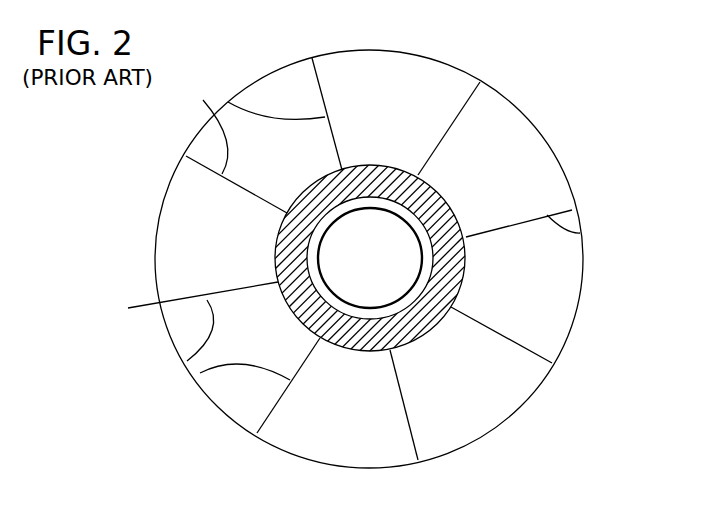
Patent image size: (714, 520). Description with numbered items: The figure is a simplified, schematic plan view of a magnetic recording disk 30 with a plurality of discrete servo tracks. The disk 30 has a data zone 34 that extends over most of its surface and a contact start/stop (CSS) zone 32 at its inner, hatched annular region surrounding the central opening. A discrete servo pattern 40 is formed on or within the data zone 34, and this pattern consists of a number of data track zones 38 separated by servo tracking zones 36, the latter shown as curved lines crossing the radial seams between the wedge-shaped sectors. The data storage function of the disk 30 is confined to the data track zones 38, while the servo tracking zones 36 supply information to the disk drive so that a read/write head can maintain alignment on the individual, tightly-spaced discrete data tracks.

The magnetic recording disk 30 is at (543, 95).
The contact start/stop (CSS) zone 32 is at (455, 276).
The data zone 34 is at (480, 380).
The servo tracking zones 36 is at (228, 102).
The data track zones 38 is at (303, 93).
The discrete servo pattern 40 is at (231, 244).